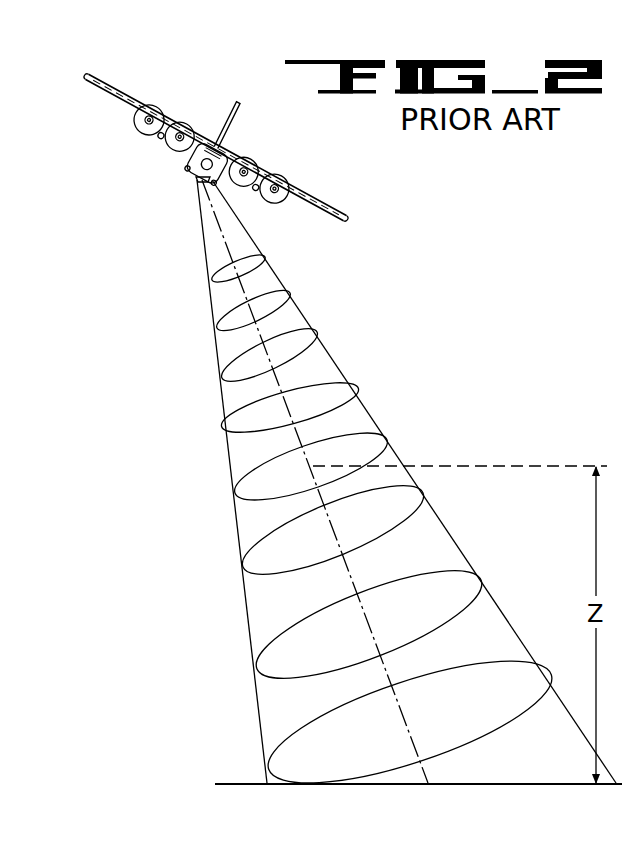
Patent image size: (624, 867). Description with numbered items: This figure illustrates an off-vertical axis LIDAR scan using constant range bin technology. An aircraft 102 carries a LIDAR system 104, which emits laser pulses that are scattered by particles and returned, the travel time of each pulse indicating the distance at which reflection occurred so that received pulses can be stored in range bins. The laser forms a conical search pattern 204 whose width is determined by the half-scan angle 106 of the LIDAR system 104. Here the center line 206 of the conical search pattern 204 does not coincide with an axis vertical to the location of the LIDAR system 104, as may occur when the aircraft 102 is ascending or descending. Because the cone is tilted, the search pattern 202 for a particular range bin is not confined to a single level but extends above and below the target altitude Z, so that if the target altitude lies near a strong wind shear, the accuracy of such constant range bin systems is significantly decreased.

The aircraft 102 is at (336, 207).
The LIDAR system 104 is at (196, 182).
The half-scan angle 106 is at (228, 248).
The search pattern 202 is at (250, 550).
The conical search pattern 204 is at (250, 643).
The center line 206 is at (289, 403).